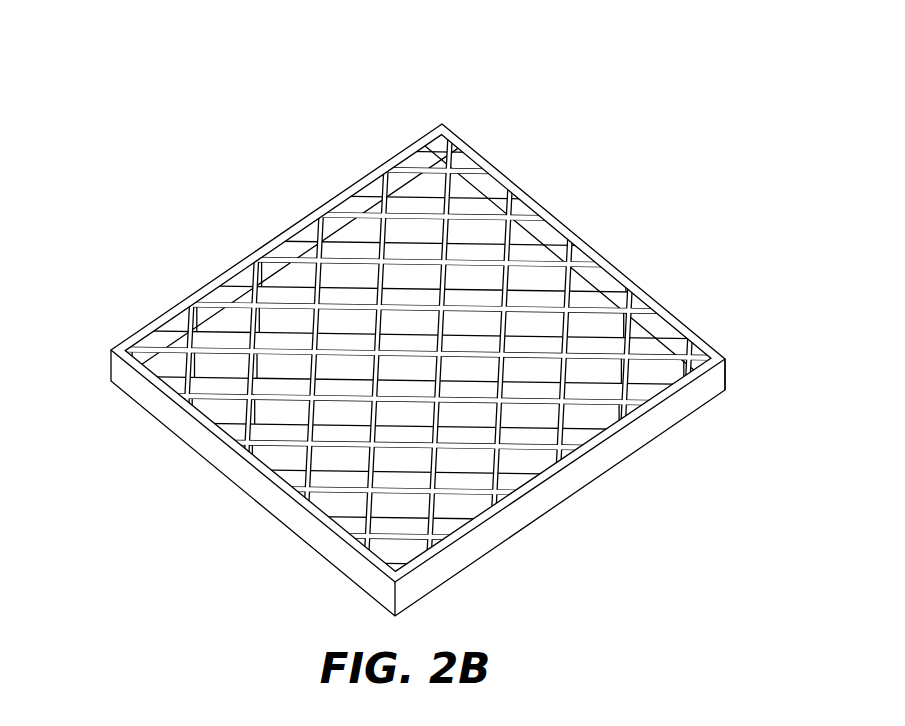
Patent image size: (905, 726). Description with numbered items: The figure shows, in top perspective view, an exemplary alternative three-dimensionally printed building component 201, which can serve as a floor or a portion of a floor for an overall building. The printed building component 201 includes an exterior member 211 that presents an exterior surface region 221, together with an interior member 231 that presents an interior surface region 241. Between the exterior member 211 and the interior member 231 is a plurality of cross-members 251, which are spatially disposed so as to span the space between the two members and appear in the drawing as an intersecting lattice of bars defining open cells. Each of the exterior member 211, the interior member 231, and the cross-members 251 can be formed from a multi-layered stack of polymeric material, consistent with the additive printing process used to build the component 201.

The printed building component 201 is at (173, 88).
The exterior member 211 is at (235, 265).
The exterior surface region 221 is at (358, 166).
The interior member 231 is at (727, 364).
The interior surface region 241 is at (680, 433).
The cross-members 251 is at (277, 447).